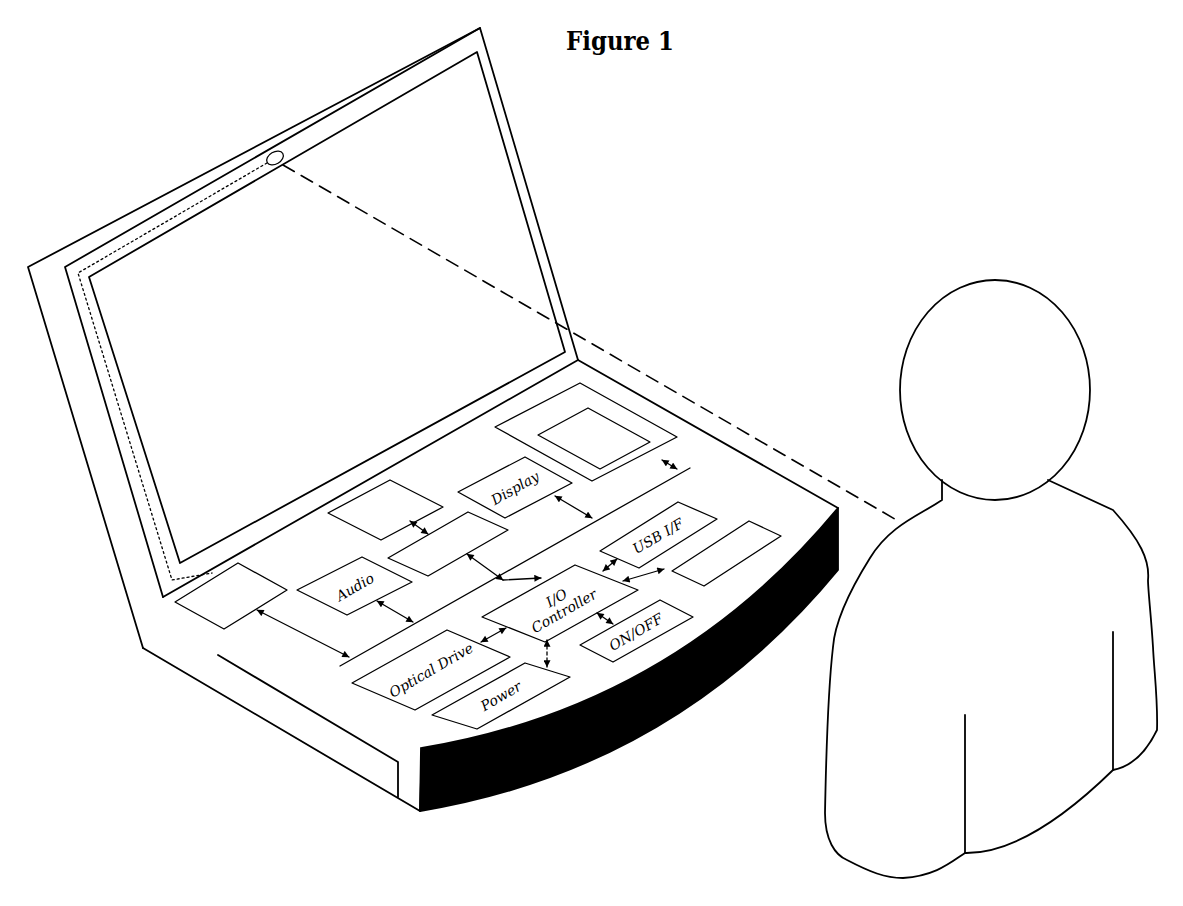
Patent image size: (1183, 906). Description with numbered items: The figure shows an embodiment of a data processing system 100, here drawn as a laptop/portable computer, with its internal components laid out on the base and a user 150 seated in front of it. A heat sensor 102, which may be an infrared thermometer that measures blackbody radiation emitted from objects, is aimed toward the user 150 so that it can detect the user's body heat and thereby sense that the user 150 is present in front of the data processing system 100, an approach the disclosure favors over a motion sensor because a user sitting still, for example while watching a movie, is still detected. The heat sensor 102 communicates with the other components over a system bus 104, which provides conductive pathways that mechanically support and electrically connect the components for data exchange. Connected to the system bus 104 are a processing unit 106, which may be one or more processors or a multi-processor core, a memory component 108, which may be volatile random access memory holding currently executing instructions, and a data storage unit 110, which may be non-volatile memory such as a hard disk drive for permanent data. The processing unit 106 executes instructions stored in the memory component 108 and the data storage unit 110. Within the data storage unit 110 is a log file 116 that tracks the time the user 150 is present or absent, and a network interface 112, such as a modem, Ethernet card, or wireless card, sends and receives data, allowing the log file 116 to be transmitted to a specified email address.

The data processing system 100 is at (118, 218).
The heat sensor 102 is at (198, 613).
The system bus 104 is at (553, 545).
The processing unit 106 is at (360, 532).
The memory component 108 is at (438, 569).
The data storage unit 110 is at (506, 434).
The network interface 112 is at (749, 521).
The log file 116 is at (625, 457).
The user 150 is at (1113, 510).